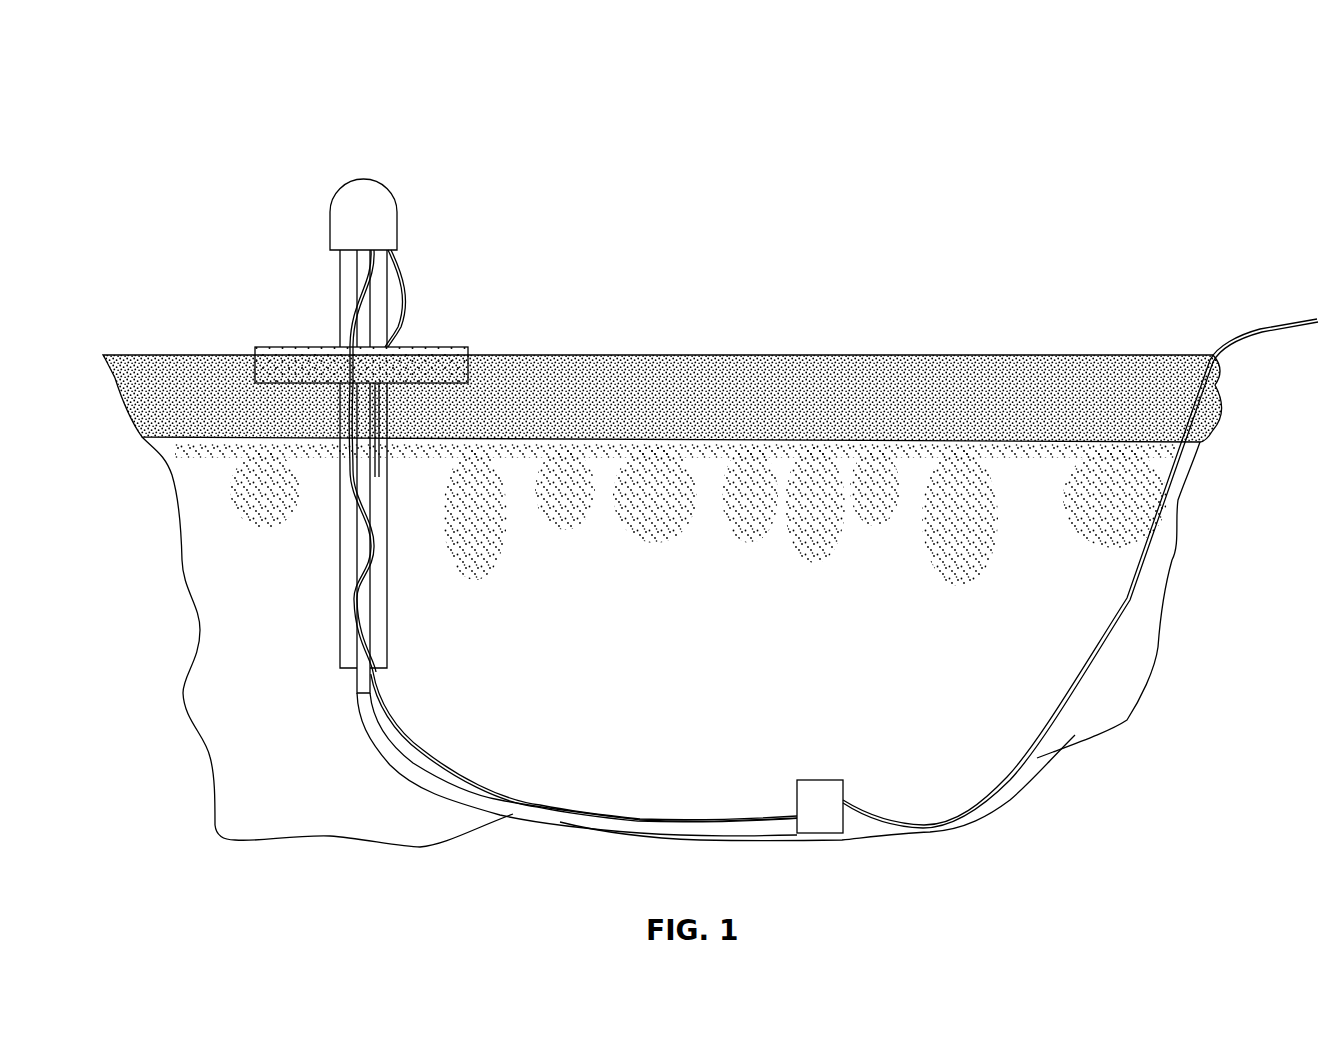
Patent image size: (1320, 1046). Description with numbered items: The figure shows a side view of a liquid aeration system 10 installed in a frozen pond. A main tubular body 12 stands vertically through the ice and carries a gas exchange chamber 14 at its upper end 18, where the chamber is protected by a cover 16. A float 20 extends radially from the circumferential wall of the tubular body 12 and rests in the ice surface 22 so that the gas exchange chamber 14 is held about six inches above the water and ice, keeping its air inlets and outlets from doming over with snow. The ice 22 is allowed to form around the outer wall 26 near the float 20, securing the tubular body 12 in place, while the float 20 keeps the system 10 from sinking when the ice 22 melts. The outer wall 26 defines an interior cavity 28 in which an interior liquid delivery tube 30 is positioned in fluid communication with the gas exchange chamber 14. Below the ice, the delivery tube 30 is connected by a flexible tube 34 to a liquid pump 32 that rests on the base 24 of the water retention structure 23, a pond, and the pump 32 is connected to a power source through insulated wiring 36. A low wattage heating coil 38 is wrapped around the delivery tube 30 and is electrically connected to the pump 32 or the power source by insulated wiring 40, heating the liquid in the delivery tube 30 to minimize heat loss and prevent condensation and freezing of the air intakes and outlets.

The liquid aeration system 10 is at (182, 101).
The main tubular body 12 is at (366, 501).
The gas exchange chamber 14 is at (368, 246).
The cover 16 is at (386, 200).
The upper end 18 is at (398, 232).
The float 20 is at (266, 353).
The ice surface 22 is at (660, 357).
The water retention structure 23 is at (989, 474).
The base 24 is at (390, 845).
The outer wall 26 is at (338, 518).
The interior cavity 28 is at (346, 650).
The interior liquid delivery tube 30 is at (375, 586).
The liquid pump 32 is at (818, 780).
The flexible tube 34 is at (383, 756).
The insulated wiring 36 is at (1053, 733).
The low wattage heating coil 38 is at (380, 530).
The insulated wiring 40 is at (466, 772).